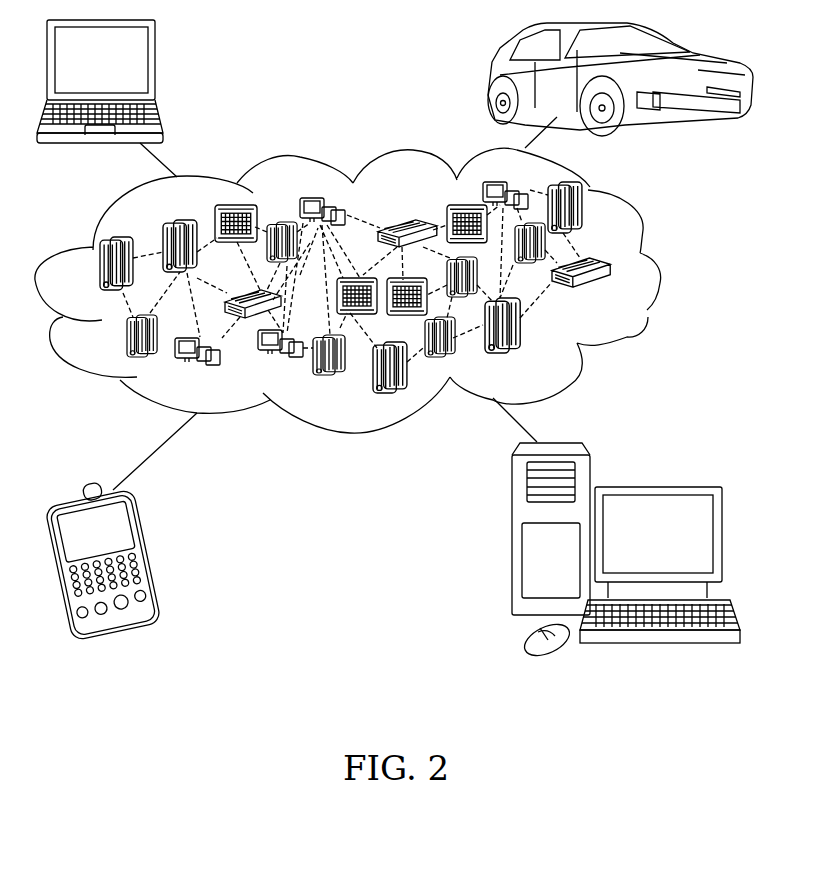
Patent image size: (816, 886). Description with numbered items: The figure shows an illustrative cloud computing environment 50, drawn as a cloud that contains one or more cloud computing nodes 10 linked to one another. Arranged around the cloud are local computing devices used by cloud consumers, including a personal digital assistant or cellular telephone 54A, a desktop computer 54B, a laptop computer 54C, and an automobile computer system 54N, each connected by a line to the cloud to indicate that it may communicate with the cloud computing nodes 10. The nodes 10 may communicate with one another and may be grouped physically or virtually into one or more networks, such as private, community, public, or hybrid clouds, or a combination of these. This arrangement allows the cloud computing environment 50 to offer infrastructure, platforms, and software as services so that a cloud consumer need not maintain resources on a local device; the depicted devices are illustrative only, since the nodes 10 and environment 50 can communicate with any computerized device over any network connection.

The cloud computing nodes 10 is at (613, 293).
The cloud computing environment 50 is at (660, 268).
The personal digital assistant (PDA) or cellular telephone 54A is at (148, 558).
The desktop computer 54B is at (655, 486).
The laptop computer 54C is at (155, 65).
The automobile computer system 54N is at (492, 78).